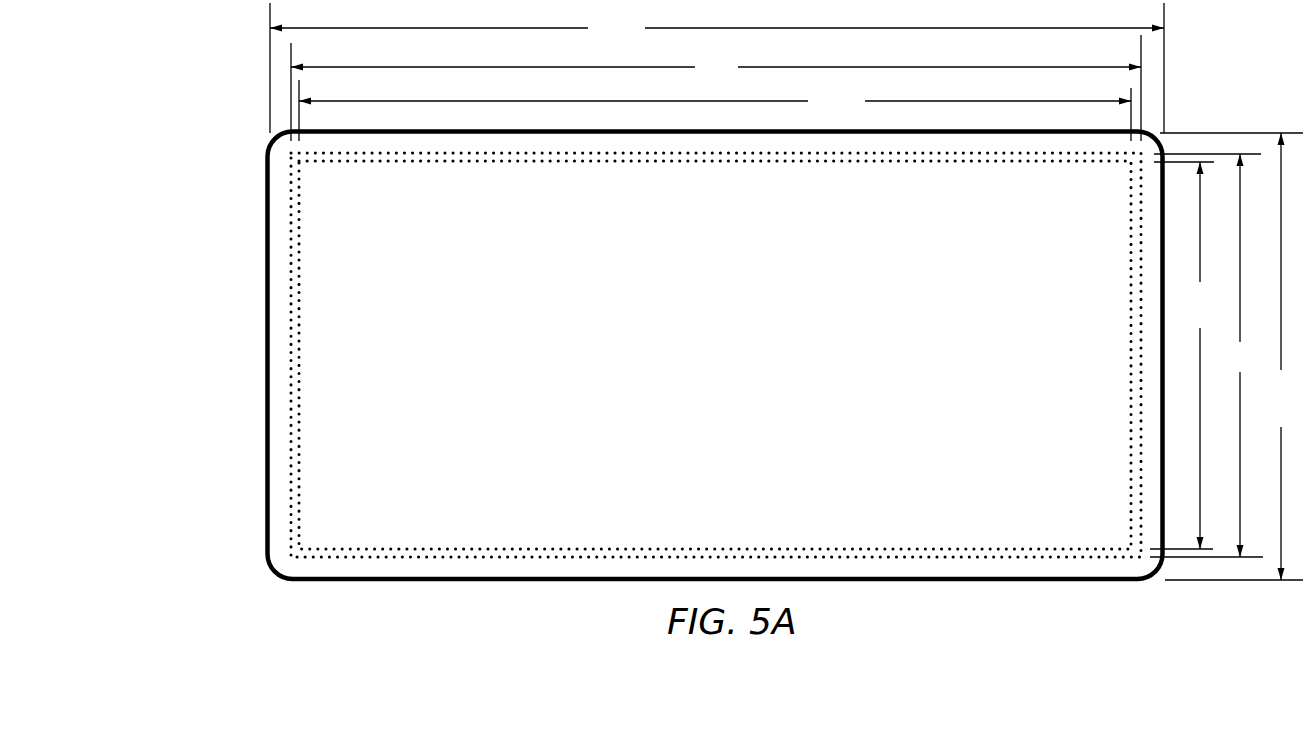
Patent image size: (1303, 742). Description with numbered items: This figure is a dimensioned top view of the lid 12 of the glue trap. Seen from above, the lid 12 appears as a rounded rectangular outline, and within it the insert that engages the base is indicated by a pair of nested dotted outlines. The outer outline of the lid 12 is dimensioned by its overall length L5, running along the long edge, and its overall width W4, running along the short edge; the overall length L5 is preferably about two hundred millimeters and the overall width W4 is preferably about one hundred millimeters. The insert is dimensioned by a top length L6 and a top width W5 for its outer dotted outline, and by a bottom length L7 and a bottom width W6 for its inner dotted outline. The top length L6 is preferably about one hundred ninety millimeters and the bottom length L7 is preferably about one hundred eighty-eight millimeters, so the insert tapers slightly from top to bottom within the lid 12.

The lid 12 is at (232, 151).
The overall length L5 is at (717, 68).
The top length L6 is at (716, 88).
The bottom length L7 is at (715, 110).
The overall width W4 is at (1231, 356).
The top width W5 is at (1206, 355).
The bottom width W6 is at (1182, 355).